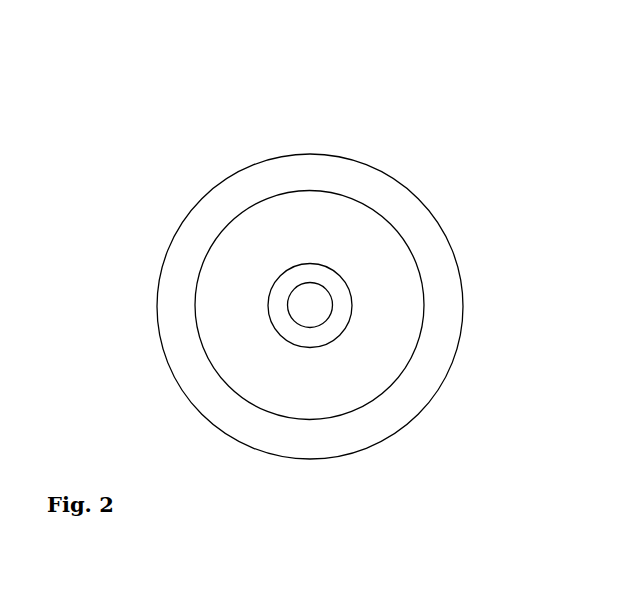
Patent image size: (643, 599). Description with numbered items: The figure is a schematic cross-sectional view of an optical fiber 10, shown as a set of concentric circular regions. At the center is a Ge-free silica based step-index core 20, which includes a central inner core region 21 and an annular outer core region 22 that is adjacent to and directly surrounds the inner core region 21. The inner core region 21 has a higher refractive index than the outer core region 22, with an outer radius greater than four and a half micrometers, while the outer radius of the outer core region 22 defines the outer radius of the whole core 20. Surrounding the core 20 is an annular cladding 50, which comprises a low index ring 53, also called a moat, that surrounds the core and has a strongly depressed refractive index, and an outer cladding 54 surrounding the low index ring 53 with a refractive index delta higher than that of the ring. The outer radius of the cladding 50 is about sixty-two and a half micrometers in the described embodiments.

The optical fiber 10 is at (401, 82).
The core 20 is at (351, 266).
The inner core region 21 is at (319, 294).
The outer core region 22 is at (351, 315).
The cladding 50 is at (476, 347).
The low index ring 53 is at (378, 350).
The outer cladding 54 is at (425, 395).